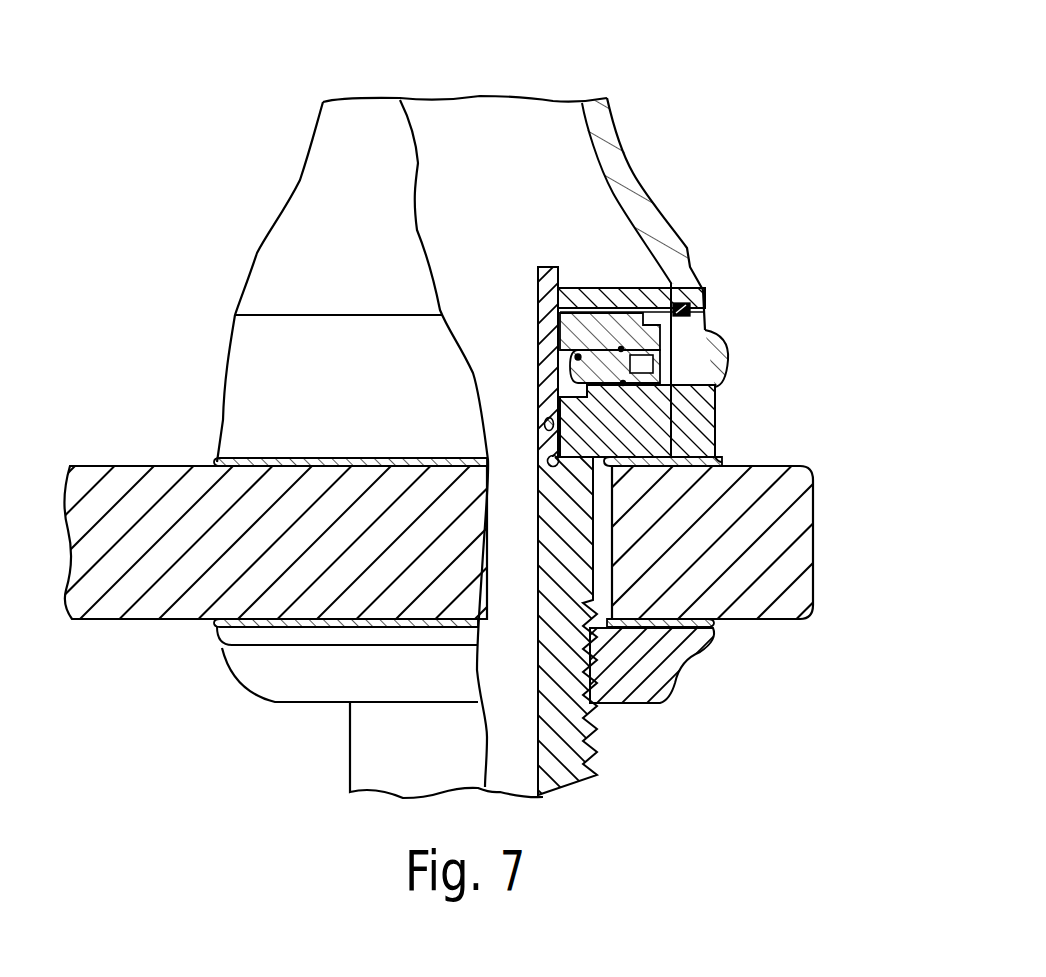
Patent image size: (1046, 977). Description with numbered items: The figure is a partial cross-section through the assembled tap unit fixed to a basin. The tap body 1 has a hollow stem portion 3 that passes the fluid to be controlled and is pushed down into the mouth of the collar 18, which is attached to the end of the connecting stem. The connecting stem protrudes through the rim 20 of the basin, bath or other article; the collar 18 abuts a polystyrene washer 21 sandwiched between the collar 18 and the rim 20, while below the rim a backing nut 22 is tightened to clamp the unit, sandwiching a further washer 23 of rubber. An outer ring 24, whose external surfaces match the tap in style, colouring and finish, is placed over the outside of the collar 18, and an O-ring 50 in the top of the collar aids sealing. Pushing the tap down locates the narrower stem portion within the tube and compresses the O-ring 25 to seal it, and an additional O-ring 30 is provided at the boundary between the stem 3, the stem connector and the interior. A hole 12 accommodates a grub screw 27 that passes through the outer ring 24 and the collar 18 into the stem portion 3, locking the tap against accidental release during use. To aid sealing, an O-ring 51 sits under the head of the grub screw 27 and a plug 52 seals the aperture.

The tap body 1 is at (605, 72).
The stem portion 3 is at (548, 302).
The hole 12 is at (582, 348).
The collar 18 is at (658, 427).
The rim 20 is at (125, 590).
The polystyrene washer 21 is at (247, 462).
The backing nut 22 is at (265, 690).
The washer 23 is at (240, 627).
The outer ring 24 is at (268, 337).
The O-ring 25 is at (545, 424).
The grub screw 27 is at (678, 366).
The O-ring 30 is at (548, 467).
The O-ring 50 is at (703, 290).
The O-ring 51 is at (620, 347).
The plug 52 is at (724, 370).